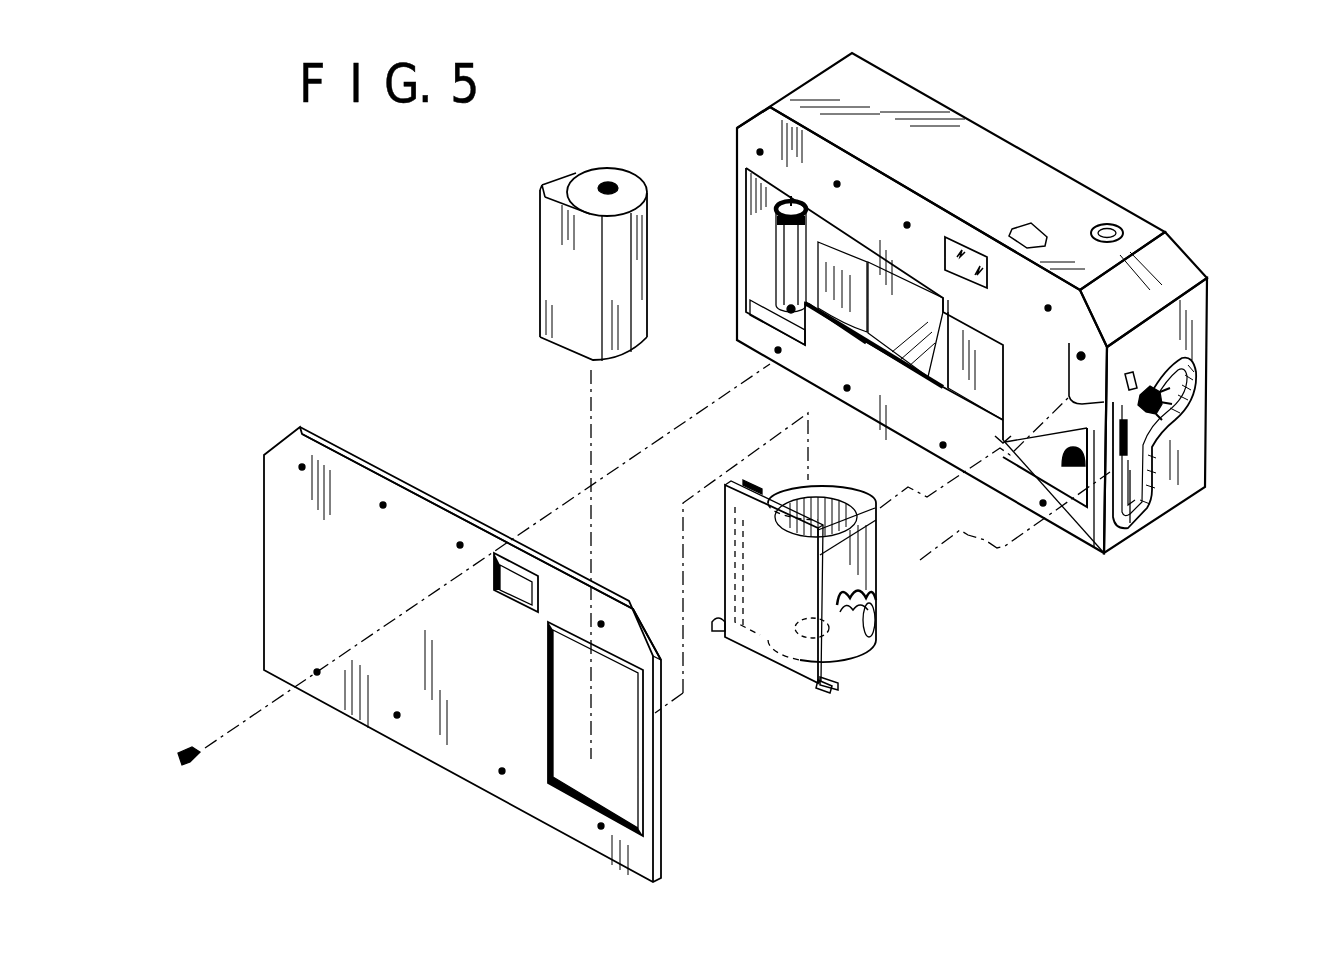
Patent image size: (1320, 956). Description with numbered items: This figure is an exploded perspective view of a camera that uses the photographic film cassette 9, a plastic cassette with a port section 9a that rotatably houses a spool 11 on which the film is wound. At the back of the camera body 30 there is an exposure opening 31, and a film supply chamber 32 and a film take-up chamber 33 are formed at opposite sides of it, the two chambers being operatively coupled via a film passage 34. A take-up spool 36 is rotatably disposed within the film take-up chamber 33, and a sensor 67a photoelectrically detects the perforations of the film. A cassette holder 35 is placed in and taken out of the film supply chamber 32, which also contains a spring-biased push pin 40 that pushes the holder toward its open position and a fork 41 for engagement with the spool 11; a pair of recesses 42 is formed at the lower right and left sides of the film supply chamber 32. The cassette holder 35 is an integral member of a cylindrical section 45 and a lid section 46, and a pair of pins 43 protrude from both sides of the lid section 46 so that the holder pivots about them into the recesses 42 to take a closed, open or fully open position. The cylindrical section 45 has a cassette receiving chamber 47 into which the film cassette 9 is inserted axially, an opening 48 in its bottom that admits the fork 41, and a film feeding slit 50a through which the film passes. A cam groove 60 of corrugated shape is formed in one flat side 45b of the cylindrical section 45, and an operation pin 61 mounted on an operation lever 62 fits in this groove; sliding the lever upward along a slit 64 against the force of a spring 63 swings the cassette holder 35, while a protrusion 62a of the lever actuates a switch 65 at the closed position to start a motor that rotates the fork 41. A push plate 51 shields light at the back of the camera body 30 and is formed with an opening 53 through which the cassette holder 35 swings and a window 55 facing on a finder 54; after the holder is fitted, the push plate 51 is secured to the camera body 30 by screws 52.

The photographic film cassette 9 is at (612, 168).
The port section 9a is at (560, 185).
The spool 11 is at (618, 186).
The camera body 30 is at (988, 131).
The exposure opening 31 is at (898, 292).
The film supply chamber 32 is at (1025, 385).
The film take-up chamber 33 is at (762, 310).
The film passage 34 is at (840, 262).
The cassette holder 35 is at (789, 598).
The take-up spool 36 is at (790, 240).
The push pin 40 is at (1077, 355).
The fork 41 is at (1030, 508).
The recesses 42 is at (997, 437).
The pins 43 is at (718, 628).
The cylindrical section 45 is at (862, 667).
The flat side 45b is at (875, 560).
The lid section 46 is at (823, 688).
The cassette receiving chamber 47 is at (826, 492).
The opening 48 is at (796, 636).
The film feeding slit 50a is at (738, 578).
The push plate 51 is at (352, 482).
The screws 52 is at (186, 752).
The opening 53 is at (567, 722).
The finder 54 is at (972, 250).
The window 55 is at (500, 588).
The cam groove 60 is at (872, 628).
The operation pin 61 is at (1068, 412).
The operation lever 62 is at (1165, 470).
The protrusion 62a is at (1157, 392).
The spring 63 is at (1160, 495).
The slit 64 is at (1134, 393).
The switch 65 is at (1165, 437).
The sensor 67a is at (855, 322).